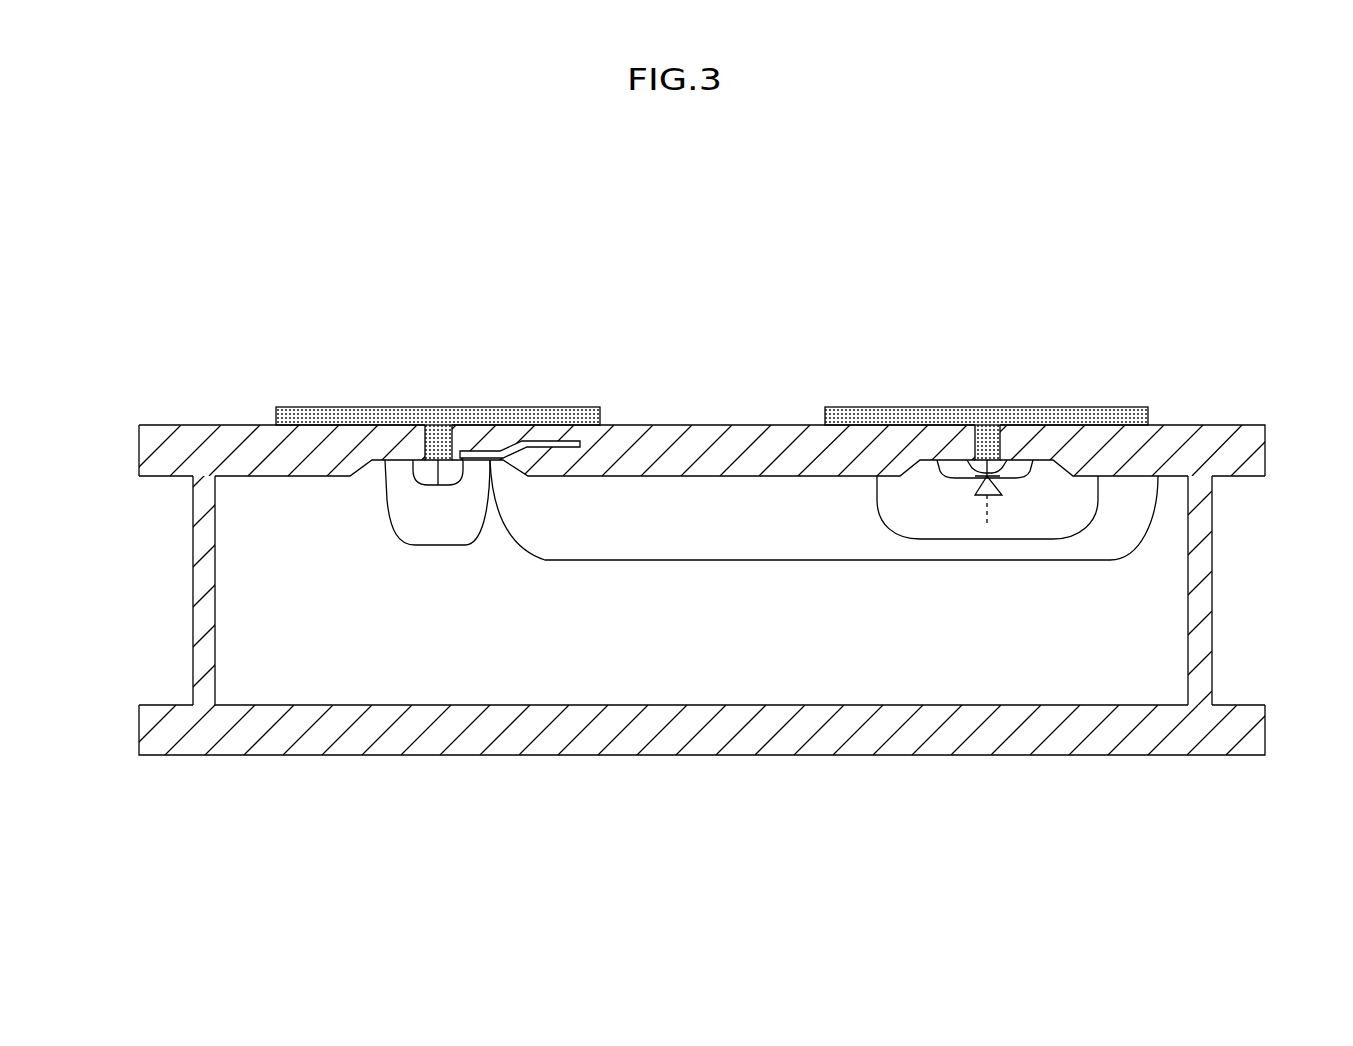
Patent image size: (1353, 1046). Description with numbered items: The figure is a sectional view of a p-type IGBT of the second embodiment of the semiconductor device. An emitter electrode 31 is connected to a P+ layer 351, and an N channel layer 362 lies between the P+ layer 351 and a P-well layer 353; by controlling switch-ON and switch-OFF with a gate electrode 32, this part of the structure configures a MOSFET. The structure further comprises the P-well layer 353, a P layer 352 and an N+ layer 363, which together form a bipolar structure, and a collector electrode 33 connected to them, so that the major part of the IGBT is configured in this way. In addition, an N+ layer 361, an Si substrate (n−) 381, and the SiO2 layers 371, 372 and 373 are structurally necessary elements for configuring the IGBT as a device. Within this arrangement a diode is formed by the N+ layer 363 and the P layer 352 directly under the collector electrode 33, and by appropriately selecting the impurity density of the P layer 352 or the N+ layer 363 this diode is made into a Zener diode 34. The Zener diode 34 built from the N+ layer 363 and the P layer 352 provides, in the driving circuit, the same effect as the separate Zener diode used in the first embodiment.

The emitter electrode 31 is at (399, 410).
The gate electrode 32 is at (477, 450).
The collector electrode 33 is at (997, 412).
The Zener diode 34 is at (975, 482).
The P+ layer 351 is at (450, 473).
The P layer 352 is at (928, 523).
The P-well layer 353 is at (824, 510).
The N+ layer 361 is at (420, 475).
The N channel layer 362 is at (473, 508).
The N+ layer 363 is at (1022, 468).
The SiO2 layer 371 is at (1245, 360).
The SiO2 layer 372 is at (200, 576).
The SiO2 layer 373 is at (935, 748).
The Si substrate (n−) 381 is at (702, 582).